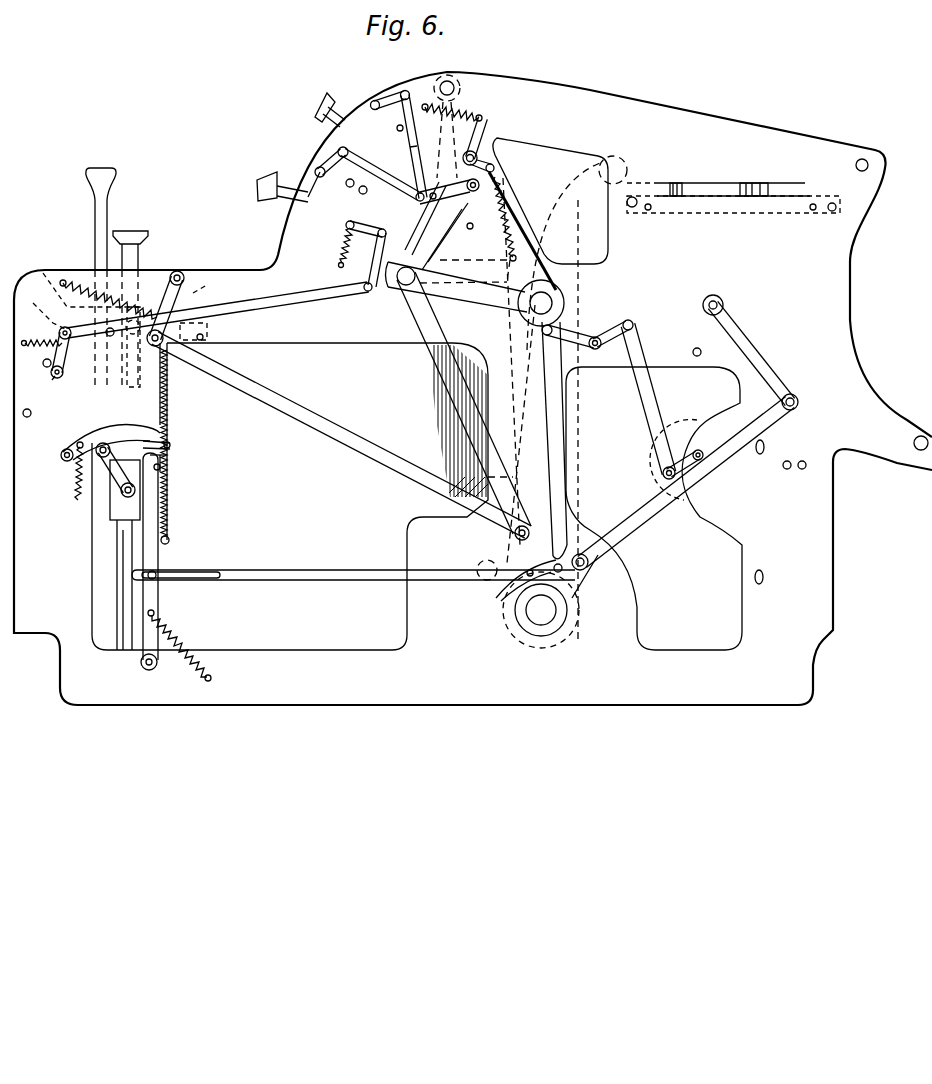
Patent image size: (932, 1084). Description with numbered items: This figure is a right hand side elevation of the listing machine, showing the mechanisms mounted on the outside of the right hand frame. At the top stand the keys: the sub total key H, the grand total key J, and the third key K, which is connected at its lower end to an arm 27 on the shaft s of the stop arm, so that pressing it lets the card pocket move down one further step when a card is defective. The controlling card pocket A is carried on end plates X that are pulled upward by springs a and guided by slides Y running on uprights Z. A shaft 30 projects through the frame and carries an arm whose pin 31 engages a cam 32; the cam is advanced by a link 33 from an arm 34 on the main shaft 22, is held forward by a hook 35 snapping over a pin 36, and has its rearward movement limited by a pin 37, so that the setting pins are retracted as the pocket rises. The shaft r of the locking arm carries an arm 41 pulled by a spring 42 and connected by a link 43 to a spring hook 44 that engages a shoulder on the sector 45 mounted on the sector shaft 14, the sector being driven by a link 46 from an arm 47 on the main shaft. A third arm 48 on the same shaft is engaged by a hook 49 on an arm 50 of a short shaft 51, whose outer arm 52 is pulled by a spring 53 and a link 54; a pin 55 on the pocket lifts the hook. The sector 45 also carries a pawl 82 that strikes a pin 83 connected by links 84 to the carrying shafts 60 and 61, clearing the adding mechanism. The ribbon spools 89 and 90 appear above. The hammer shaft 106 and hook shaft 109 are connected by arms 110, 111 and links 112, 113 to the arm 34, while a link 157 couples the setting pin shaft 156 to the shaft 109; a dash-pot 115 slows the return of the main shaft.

The pocket A is at (122, 162).
The key K is at (128, 243).
The key H is at (262, 186).
The key J is at (330, 92).
The end plates X is at (110, 429).
The slides Y is at (117, 510).
The uprights Z is at (123, 560).
The springs a is at (168, 402).
The shaft s is at (44, 367).
The shaft r is at (49, 388).
The sector shaft 14 is at (550, 300).
The main shaft 22 is at (541, 612).
The arm 27 is at (136, 352).
The shaft 30 is at (92, 460).
The pin 31 is at (118, 498).
The cam 32 is at (152, 490).
The link 33 is at (276, 572).
The arm 34 is at (577, 583).
The hook 35 is at (168, 456).
The pin 36 is at (163, 470).
The pin 37 is at (172, 445).
The arm 41 is at (62, 376).
The spring 42 is at (44, 341).
The link 43 is at (240, 306).
The spring hook 44 is at (372, 262).
The sector 45 is at (457, 274).
The link 46 is at (410, 300).
The arm 47 is at (514, 550).
The arm 48 is at (47, 306).
The hook 49 is at (45, 272).
The arm 50 is at (204, 308).
The short shaft 51 is at (183, 273).
The arm 52 is at (150, 320).
The spring 53 is at (90, 280).
The link 54 is at (286, 403).
The pin 55 is at (114, 328).
The shaft 60 is at (316, 175).
The shaft 61 is at (374, 100).
The pawl 82 is at (470, 205).
The pin 83 is at (415, 200).
The links 84 is at (398, 158).
The spool 89 is at (678, 182).
The spool 90 is at (752, 182).
The shaft 106 is at (716, 300).
The shaft 109 is at (603, 335).
The arm 110 is at (752, 350).
The arm 111 is at (565, 330).
The link 112 is at (630, 533).
The link 113 is at (557, 455).
The dash-pot 115 is at (452, 432).
The shaft 156 is at (696, 448).
The link 157 is at (655, 402).